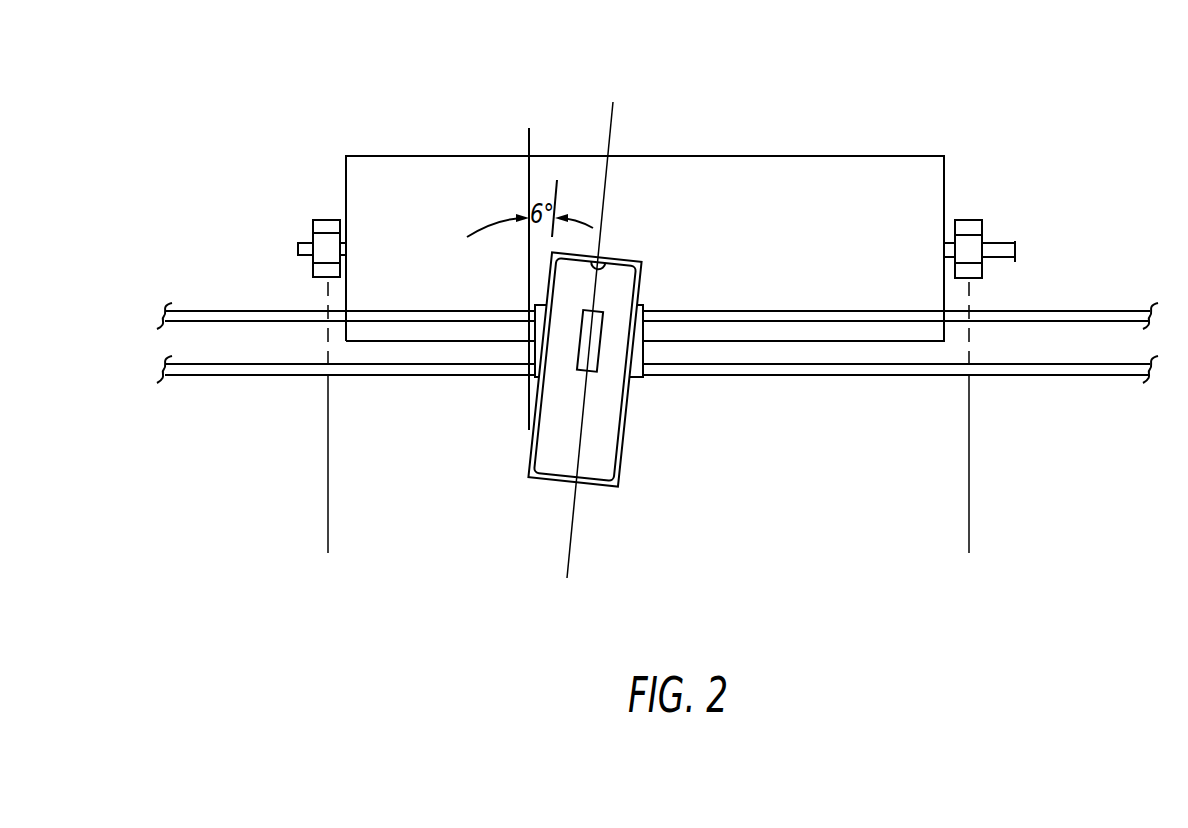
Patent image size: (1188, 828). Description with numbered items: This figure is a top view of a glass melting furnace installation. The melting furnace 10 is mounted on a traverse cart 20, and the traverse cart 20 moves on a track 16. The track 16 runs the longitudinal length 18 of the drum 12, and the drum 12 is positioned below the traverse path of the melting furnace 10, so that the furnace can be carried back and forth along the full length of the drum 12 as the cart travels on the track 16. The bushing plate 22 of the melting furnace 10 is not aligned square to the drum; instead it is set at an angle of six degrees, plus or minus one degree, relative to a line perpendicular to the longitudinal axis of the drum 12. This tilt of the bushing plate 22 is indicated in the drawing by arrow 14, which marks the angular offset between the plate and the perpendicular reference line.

The melting furnace 10 is at (598, 444).
The drum 12 is at (952, 152).
The arrow 14 is at (540, 186).
The track 16 is at (1080, 321).
The longitudinal length 18 is at (328, 532).
The traverse cart 20 is at (643, 379).
The bushing plate 22 is at (590, 340).